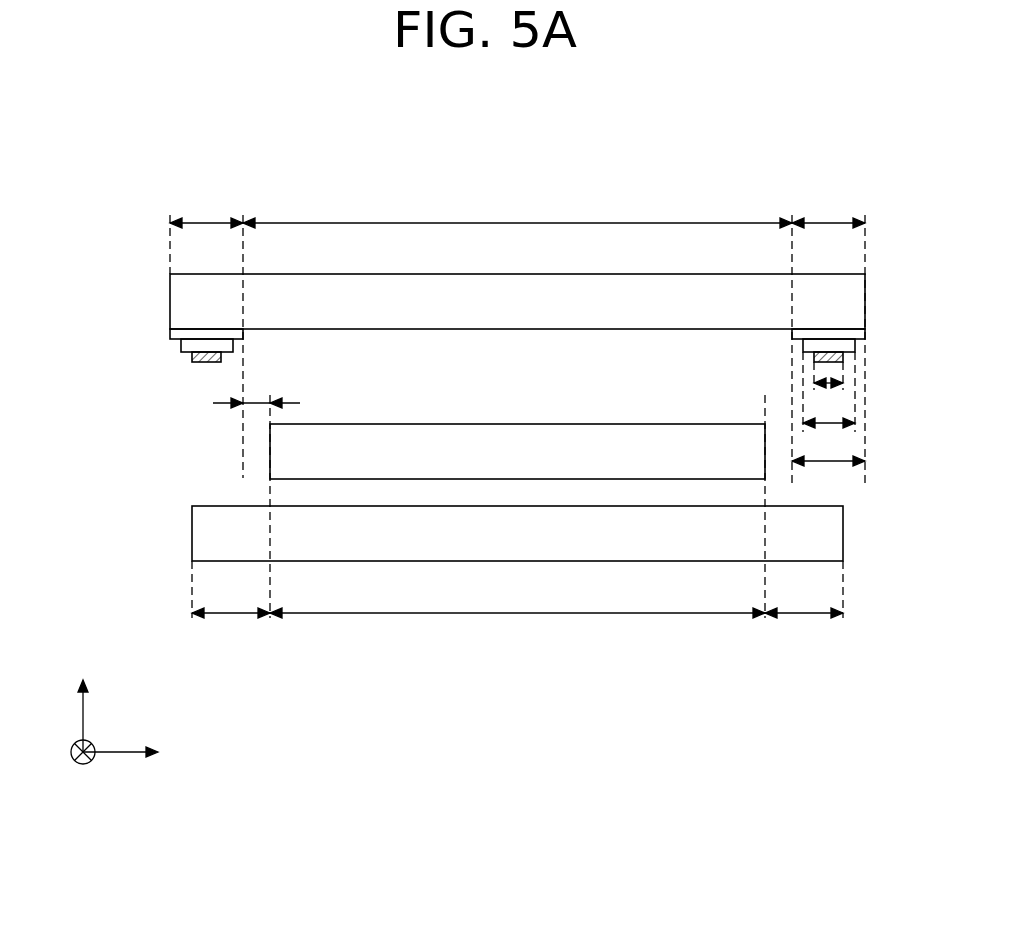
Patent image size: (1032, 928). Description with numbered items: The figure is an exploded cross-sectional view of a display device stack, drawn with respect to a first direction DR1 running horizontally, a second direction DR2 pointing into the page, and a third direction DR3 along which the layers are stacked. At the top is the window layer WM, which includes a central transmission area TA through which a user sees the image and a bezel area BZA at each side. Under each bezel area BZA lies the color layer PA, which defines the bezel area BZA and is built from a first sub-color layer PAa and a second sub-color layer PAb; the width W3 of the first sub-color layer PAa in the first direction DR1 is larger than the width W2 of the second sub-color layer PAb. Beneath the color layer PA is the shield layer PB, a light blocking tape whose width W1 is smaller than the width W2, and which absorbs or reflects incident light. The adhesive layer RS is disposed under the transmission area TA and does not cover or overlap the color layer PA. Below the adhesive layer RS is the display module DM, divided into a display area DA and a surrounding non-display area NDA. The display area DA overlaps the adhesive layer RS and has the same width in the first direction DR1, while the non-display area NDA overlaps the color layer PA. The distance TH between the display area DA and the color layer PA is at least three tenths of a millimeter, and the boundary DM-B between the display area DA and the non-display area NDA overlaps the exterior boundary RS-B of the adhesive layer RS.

The window layer WM is at (178, 300).
The color layer PA is at (67, 327).
The first sub-color layer PAa is at (176, 334).
The second sub-color layer PAb is at (178, 345).
The shield layer PB is at (200, 363).
The bezel area BZA is at (517, 339).
The transmission area TA is at (517, 211).
The distance TH is at (256, 389).
The adhesive layer RS is at (508, 435).
The exterior boundary of the adhesive layer RS-B is at (270, 451).
The display module DM is at (833, 535).
The boundary DM-B is at (270, 536).
The width of the shield layer W1 is at (828, 388).
The width of the second sub-color layer W2 is at (829, 428).
The width of the first sub-color layer W3 is at (828, 466).
The non-display area NDA is at (517, 603).
The display area DA is at (517, 626).
The first direction DR1 is at (141, 752).
The second direction DR2 is at (82, 766).
The third direction DR3 is at (82, 701).